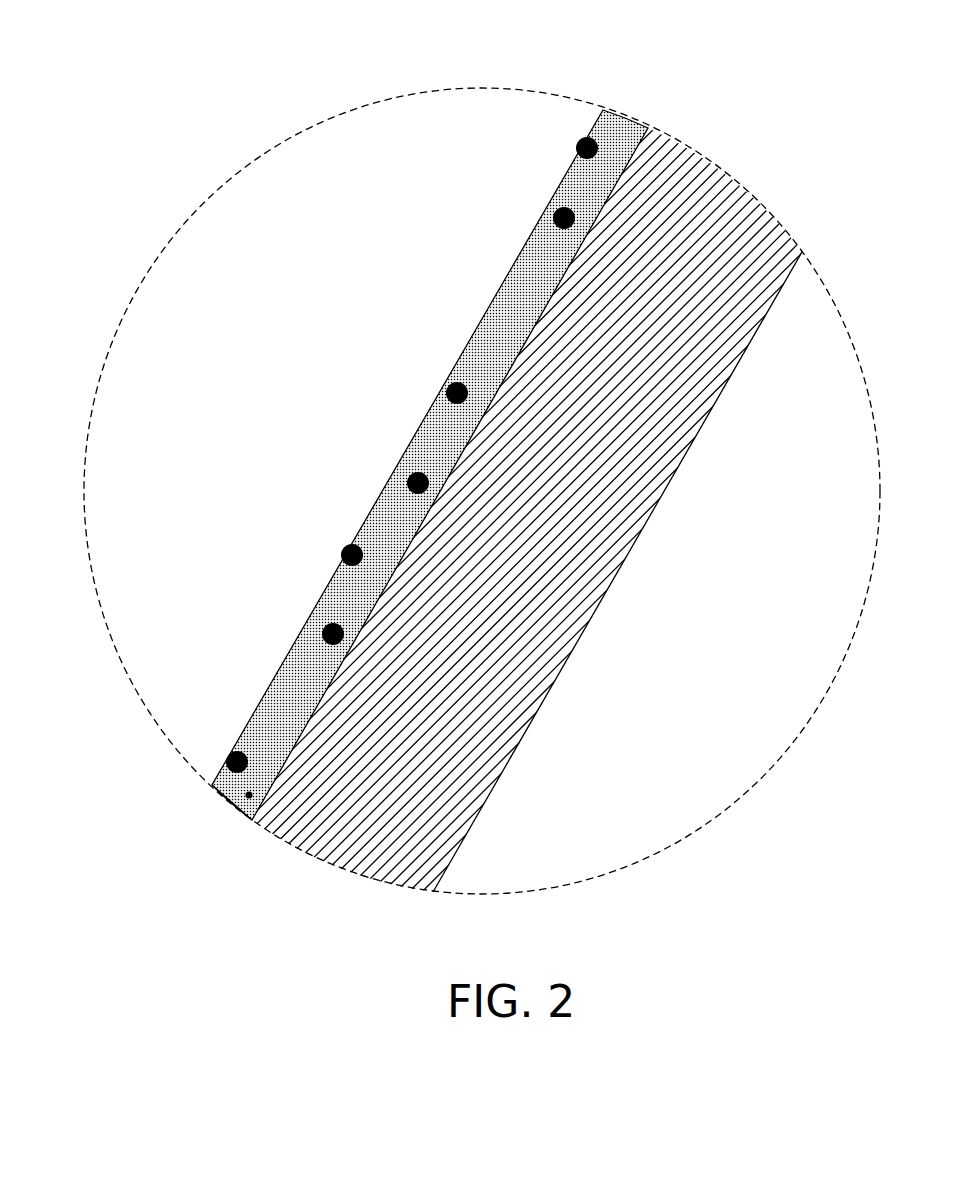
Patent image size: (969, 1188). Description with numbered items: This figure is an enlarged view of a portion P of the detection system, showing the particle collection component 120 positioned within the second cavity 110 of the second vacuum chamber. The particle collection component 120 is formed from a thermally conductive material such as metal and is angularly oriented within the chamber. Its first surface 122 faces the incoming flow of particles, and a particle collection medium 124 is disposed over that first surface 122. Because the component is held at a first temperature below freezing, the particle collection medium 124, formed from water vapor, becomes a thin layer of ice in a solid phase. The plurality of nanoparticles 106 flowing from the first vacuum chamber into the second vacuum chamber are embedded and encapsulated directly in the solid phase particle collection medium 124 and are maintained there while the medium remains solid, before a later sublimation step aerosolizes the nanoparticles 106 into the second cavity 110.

The enlarged portion P is at (438, 89).
The nanoparticles 106 is at (586, 138).
The second cavity 110 is at (305, 356).
The particle collection component 120 is at (330, 855).
The first surface 122 is at (246, 796).
The particle collection medium 124 is at (265, 710).